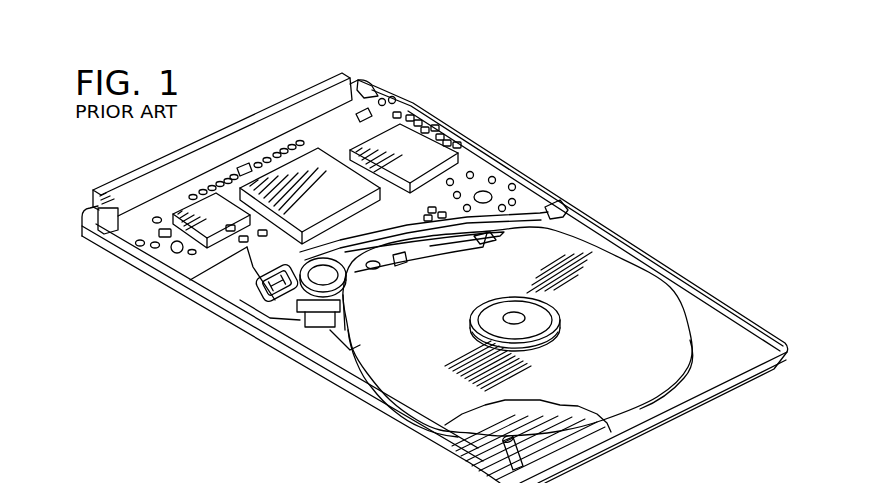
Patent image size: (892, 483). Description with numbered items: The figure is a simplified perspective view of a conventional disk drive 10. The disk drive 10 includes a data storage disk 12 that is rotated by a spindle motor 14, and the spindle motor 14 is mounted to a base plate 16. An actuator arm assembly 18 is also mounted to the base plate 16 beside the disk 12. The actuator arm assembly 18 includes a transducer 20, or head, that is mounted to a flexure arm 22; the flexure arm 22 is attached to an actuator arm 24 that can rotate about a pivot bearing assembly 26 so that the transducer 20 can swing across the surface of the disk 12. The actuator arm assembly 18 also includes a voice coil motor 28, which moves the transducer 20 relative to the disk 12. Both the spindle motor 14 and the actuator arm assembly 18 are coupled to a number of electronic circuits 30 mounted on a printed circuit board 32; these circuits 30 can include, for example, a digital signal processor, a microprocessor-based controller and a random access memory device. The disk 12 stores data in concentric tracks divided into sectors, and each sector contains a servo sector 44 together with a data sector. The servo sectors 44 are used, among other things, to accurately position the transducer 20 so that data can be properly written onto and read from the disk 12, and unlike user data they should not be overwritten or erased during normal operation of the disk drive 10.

The disk drive 10 is at (553, 177).
The data storage disk 12 is at (665, 293).
The spindle motor 14 is at (545, 324).
The base plate 16 is at (713, 330).
The actuator arm assembly 18 is at (459, 262).
The transducer 20 is at (494, 238).
The flexure arm 22 is at (423, 264).
The actuator arm 24 is at (362, 278).
The pivot bearing assembly 26 is at (350, 292).
The voice coil motor 28 is at (263, 302).
The electronic circuits 30 is at (228, 222).
The printed circuit board 32 is at (327, 133).
The servo sector 44 is at (478, 434).